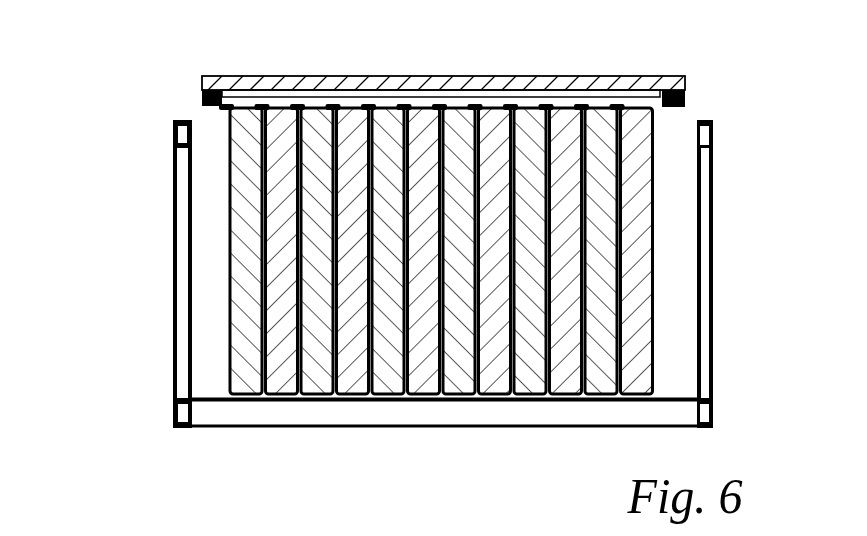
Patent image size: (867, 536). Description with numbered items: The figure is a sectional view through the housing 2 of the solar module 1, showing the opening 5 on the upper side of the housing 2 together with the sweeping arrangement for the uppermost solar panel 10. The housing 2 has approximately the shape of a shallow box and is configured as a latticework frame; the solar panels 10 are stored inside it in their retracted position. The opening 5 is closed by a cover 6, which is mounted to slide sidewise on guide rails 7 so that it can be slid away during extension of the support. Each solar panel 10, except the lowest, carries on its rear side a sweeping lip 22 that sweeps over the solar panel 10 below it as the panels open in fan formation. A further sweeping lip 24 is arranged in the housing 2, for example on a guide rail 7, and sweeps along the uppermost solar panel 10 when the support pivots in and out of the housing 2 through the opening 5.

The solar module 1 is at (118, 471).
The housing 2 is at (182, 352).
The opening 5 is at (434, 64).
The cover 6 is at (461, 76).
The guide rails 7 is at (202, 93).
The solar panels 10 is at (383, 372).
The sweeping lip 22 is at (333, 106).
The further sweeping lip 24 is at (368, 159).